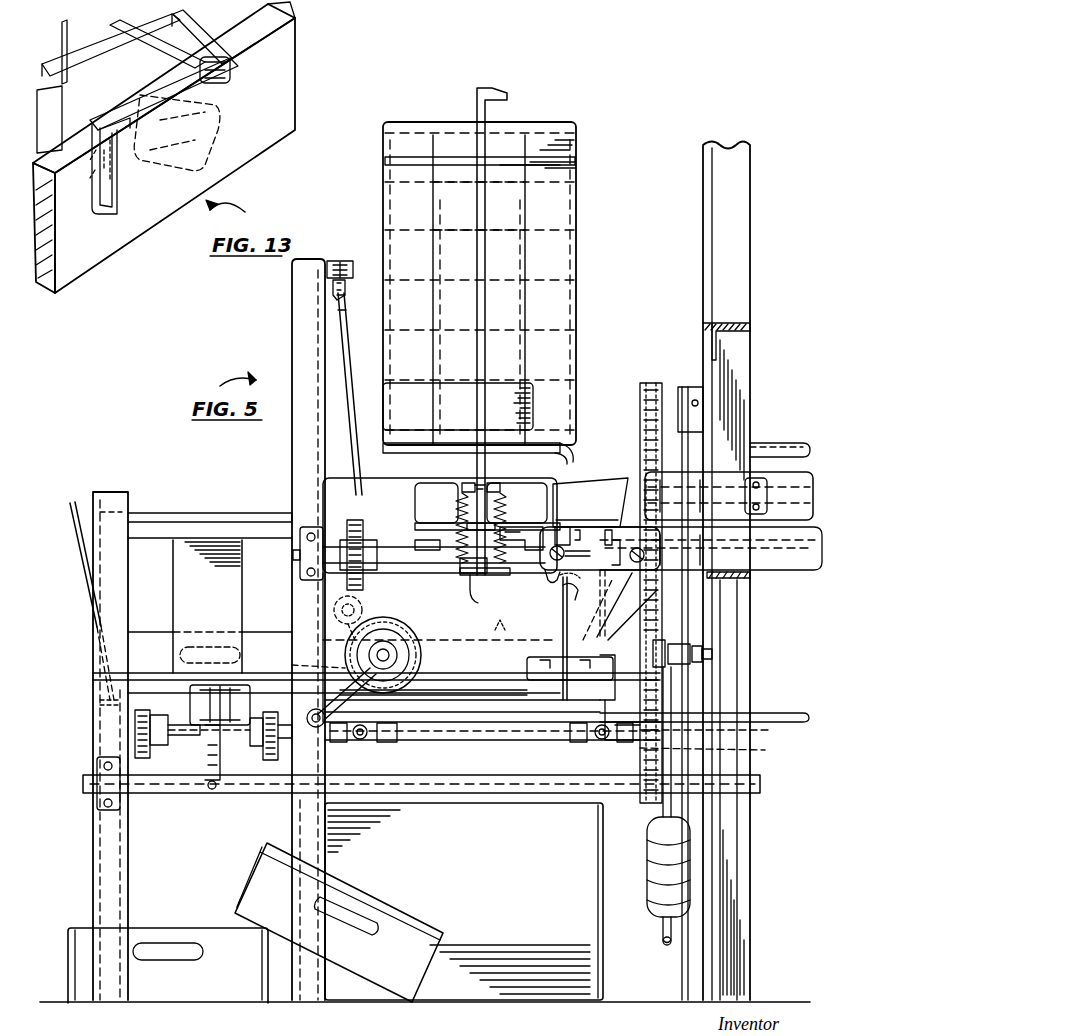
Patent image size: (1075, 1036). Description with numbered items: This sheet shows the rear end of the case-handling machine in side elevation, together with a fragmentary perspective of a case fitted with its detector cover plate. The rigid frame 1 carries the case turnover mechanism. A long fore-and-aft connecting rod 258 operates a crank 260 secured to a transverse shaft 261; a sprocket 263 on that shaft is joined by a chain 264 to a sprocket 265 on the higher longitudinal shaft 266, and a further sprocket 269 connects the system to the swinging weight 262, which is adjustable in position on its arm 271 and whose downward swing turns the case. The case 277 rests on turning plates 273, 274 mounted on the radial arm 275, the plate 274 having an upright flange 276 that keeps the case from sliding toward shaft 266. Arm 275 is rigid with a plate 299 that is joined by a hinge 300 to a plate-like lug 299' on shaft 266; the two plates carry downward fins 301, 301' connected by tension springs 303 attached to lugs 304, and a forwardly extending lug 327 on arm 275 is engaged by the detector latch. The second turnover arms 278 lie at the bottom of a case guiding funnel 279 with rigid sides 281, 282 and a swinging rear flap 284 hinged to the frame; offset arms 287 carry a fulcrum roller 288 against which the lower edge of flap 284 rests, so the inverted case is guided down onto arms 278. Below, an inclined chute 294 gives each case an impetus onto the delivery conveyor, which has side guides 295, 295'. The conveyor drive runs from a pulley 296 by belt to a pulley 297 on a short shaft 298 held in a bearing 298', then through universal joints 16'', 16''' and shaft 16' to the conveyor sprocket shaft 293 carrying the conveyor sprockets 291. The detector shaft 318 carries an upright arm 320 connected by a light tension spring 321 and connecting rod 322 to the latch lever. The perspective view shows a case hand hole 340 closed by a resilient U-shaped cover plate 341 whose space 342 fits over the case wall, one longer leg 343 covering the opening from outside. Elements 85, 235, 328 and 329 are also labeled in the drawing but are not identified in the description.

In FIG. 5, the frame 1 is at (300, 418).
In FIG. 5, the shaft 16' is at (492, 728).
In FIG. 5, the universal joint 16'' is at (601, 745).
In FIG. 5, the universal joint 16''' is at (363, 745).
In FIG. 5, the bracket 85 is at (521, 564).
In FIG. 5, the pivot pin 235 is at (338, 297).
In FIG. 5, the connecting rod 258 is at (775, 710).
In FIG. 5, the crank 260 is at (420, 688).
In FIG. 5, the transverse shaft 261 is at (400, 636).
In FIG. 5, the weight 262 is at (655, 930).
In FIG. 5, the sprocket 263 is at (392, 644).
In FIG. 5, the chain 264 is at (362, 608).
In FIG. 5, the sprocket 265 is at (363, 520).
In FIG. 5, the longitudinal shaft 266 is at (380, 570).
In FIG. 5, the sprocket 269 is at (735, 635).
In FIG. 5, the arm 271 is at (600, 820).
In FIG. 5, the case supporting plate 273 is at (400, 157).
In FIG. 5, the case supporting plate 274 is at (445, 400).
In FIG. 5, the radial arm 275 is at (470, 208).
In FIG. 5, the flange 276 is at (395, 453).
In FIG. 13, the case 277 is at (290, 8).
In FIG. 5, the case 277 is at (578, 292).
In FIG. 5, the arms 278 is at (510, 618).
In FIG. 5, the case guiding funnel 279 is at (622, 465).
In FIG. 5, the rigid side 281 is at (560, 483).
In FIG. 5, the rigid side 282 is at (605, 514).
In FIG. 5, the swinging side 284 is at (350, 374).
In FIG. 5, the offset arms 287 is at (300, 656).
In FIG. 5, the fulcrum roller 288 is at (362, 617).
In FIG. 5, the conveyor sprockets 291 is at (150, 757).
In FIG. 5, the conveyor sprocket shaft 293 is at (243, 745).
In FIG. 5, the inclined chute 294 is at (242, 597).
In FIG. 5, the side guide 295 is at (348, 699).
In FIG. 5, the outer side guide 295' is at (86, 575).
In FIG. 5, the pulley 296 is at (690, 387).
In FIG. 5, the pulley 297 is at (615, 700).
In FIG. 5, the short shaft 298 is at (722, 730).
In FIG. 5, the bearing 298' is at (722, 749).
In FIG. 5, the plate 299 is at (487, 506).
In FIG. 5, the plate-like lug 299' is at (411, 547).
In FIG. 5, the hinge 300 is at (418, 518).
In FIG. 5, the fin 301 is at (465, 472).
In FIG. 5, the fin 301' is at (479, 595).
In FIG. 5, the tension springs 303 is at (470, 553).
In FIG. 5, the lugs 304 is at (492, 483).
In FIG. 5, the longitudinal shaft 318 is at (168, 793).
In FIG. 5, the upright arm 320 is at (520, 512).
In FIG. 5, the tension spring 321 is at (563, 603).
In FIG. 5, the connecting rod 322 is at (622, 580).
In FIG. 5, the lug 327 is at (505, 90).
In FIG. 5, the spring 328 is at (540, 578).
In FIG. 5, the block 329 is at (560, 530).
In FIG. 13, the hand hole 340 is at (225, 150).
In FIG. 13, the U-shaped cover plate 341 is at (232, 70).
In FIG. 13, the space 342 is at (108, 188).
In FIG. 13, the depending plate member 343 is at (107, 205).